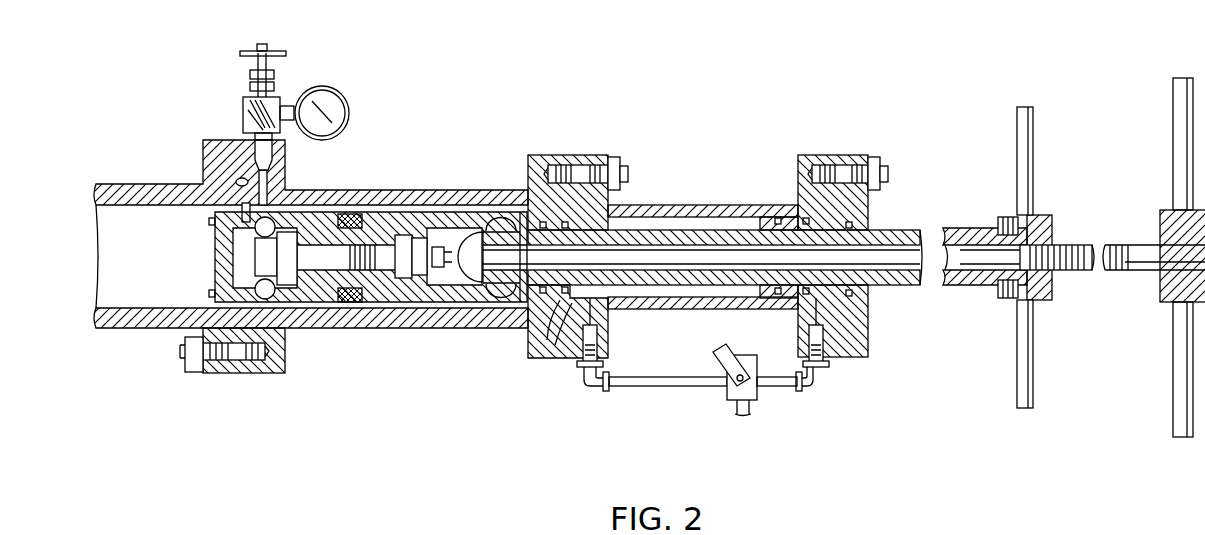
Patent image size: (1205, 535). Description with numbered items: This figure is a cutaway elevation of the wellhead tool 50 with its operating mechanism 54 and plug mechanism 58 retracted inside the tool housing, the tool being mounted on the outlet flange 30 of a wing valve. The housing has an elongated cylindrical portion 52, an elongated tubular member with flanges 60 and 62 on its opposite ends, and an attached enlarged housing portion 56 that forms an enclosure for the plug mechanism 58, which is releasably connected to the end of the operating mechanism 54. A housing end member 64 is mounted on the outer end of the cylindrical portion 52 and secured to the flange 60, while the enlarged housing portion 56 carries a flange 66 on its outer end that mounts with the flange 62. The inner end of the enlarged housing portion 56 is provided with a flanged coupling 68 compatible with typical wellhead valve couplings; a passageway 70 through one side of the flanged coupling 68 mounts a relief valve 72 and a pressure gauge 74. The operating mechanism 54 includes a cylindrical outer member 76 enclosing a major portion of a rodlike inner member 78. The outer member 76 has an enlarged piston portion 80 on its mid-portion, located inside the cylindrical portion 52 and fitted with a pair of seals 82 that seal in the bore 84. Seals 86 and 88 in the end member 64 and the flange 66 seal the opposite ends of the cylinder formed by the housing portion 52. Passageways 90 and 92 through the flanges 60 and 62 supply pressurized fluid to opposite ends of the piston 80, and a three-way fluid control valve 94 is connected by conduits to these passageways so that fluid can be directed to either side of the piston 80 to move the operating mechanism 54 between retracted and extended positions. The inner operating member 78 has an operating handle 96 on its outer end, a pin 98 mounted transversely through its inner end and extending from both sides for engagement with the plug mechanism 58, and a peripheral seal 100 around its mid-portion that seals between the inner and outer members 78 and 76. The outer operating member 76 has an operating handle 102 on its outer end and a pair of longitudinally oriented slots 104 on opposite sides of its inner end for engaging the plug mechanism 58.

The outlet flange 30 is at (222, 375).
The wellhead tool 50 is at (416, 390).
The elongated cylindrical housing portion 52 is at (690, 205).
The operating mechanism 54 is at (640, 285).
The enlarged housing portion 56 is at (355, 326).
The plug mechanism 58 is at (208, 262).
The flange 60 is at (815, 155).
The flange 62 is at (586, 155).
The housing end member 64 is at (855, 357).
The flange 66 is at (543, 155).
The flanged coupling 68 is at (262, 375).
The passageway 70 is at (267, 185).
The relief valve 72 is at (245, 110).
The pressure gauge 74 is at (350, 110).
The cylindrical outer member 76 is at (898, 230).
The rodlike inner member 78 is at (1073, 248).
The piston portion 80 is at (785, 217).
The seals 82 is at (790, 300).
The bore 84 is at (632, 230).
The seal 86 is at (868, 305).
The seal 88 is at (533, 338).
The passageway 90 is at (810, 340).
The passageway 92 is at (585, 352).
The three-way fluid control valve 94 is at (728, 392).
The operating handle 96 is at (1173, 388).
The pin 98 is at (448, 245).
The peripheral seal 100 is at (968, 243).
The operating handle 102 is at (1017, 362).
The longitudinally oriented slots 104 is at (468, 300).